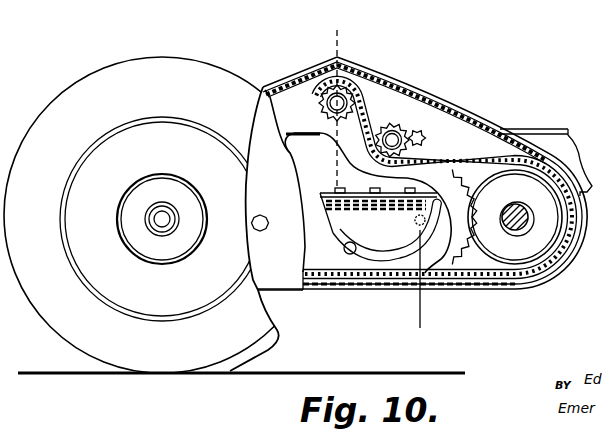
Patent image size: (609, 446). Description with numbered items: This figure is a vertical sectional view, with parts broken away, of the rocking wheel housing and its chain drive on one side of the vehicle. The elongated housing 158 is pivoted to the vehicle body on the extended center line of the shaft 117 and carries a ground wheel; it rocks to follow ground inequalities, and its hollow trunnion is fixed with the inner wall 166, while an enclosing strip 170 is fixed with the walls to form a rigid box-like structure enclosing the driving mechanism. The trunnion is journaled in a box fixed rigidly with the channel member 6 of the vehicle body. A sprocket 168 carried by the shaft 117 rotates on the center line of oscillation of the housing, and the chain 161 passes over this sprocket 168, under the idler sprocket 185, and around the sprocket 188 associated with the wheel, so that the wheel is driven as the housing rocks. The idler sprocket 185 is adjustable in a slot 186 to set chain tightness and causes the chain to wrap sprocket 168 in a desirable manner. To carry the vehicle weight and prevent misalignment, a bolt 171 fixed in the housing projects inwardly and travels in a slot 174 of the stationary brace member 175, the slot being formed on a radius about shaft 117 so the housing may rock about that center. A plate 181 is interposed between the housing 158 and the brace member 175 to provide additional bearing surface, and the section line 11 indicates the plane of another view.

The channel member 6 is at (547, 133).
The section line 11- 11 is at (328, 40).
The shaft 117 is at (342, 96).
The elongated housing 158 is at (433, 82).
The chain 161 is at (457, 130).
The inner wall 166 is at (437, 262).
The sprocket 168 is at (348, 92).
The enclosing strip 170 is at (372, 80).
The bolt 171 is at (273, 203).
The slot 174 is at (345, 250).
The brace member 175 is at (380, 224).
The plate 181 is at (431, 293).
The idler sprocket 185 is at (394, 100).
The slot 186 is at (421, 130).
The sprocket 188 is at (515, 217).